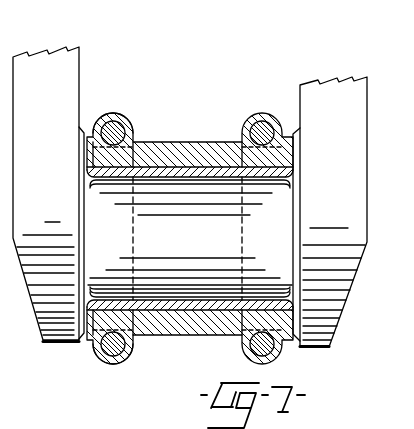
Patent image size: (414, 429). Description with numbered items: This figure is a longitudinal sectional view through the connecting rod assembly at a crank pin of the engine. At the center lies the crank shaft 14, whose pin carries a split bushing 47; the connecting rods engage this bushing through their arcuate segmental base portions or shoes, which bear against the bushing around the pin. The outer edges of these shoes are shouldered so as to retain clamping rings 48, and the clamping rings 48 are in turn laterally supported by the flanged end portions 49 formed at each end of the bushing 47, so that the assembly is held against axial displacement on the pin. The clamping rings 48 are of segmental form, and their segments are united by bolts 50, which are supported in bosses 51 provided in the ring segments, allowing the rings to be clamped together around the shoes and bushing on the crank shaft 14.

The crank shaft 14 is at (189, 234).
The split bushing 47 is at (171, 165).
The clamping rings 48 is at (97, 353).
The flanged end portions 49 is at (87, 140).
The bolts 50 is at (119, 117).
The bosses 51 is at (123, 365).